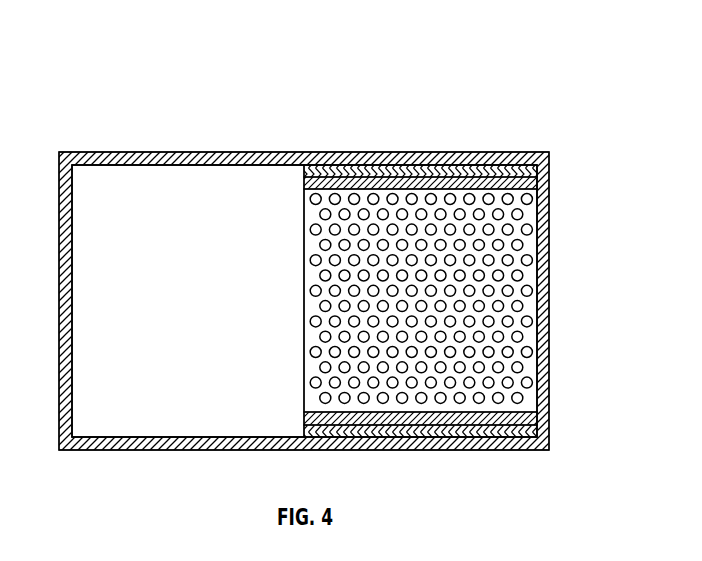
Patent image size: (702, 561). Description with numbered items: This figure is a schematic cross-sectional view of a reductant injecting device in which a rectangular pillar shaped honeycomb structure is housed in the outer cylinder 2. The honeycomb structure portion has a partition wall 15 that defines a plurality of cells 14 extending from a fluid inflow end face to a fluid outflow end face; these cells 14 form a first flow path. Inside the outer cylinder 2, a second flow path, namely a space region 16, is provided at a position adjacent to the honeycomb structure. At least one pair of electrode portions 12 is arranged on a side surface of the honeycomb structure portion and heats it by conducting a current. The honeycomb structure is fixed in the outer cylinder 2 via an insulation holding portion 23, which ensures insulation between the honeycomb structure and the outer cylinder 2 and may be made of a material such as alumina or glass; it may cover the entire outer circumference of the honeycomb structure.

The outer cylinder 2 is at (507, 156).
The electrode portions 12 is at (431, 181).
The cells 14 is at (336, 200).
The partition wall 15 is at (383, 194).
The second flow path (space region) 16 is at (183, 255).
The insulation holding portion 23 is at (472, 172).